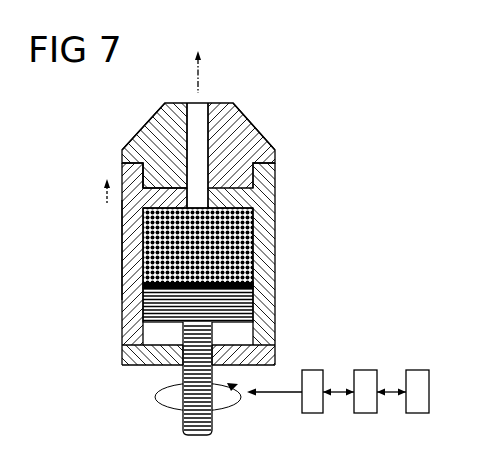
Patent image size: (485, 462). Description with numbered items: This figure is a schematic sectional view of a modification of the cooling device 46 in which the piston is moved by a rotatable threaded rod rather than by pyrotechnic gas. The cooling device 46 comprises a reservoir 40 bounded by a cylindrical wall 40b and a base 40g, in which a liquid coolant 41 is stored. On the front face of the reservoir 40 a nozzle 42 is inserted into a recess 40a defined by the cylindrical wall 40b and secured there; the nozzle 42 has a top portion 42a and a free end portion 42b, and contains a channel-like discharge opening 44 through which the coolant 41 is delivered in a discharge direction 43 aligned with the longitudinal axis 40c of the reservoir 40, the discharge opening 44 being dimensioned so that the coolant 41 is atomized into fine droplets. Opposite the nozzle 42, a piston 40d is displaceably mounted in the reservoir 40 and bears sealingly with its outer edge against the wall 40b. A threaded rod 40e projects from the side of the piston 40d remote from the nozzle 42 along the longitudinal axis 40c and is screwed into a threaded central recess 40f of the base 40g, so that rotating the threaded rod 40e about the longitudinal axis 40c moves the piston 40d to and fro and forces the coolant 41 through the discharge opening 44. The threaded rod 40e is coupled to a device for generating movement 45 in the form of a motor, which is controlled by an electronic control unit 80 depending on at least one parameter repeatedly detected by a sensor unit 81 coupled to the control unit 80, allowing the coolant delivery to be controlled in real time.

The reservoir 40 is at (258, 219).
The recess 40a is at (150, 163).
The cylindrical wall 40b is at (122, 246).
The longitudinal axis 40c is at (86, 194).
The piston 40d is at (137, 309).
The threaded rod 40e is at (186, 424).
The central recess 40f is at (178, 363).
The base 40g is at (122, 355).
The liquid coolant 41 is at (262, 247).
The nozzle 42 is at (276, 155).
The top portion 42a is at (252, 125).
The free end portion 42b is at (262, 170).
The discharge direction 43 is at (186, 72).
The discharge opening 44 is at (193, 118).
The device for generating movement 45 is at (314, 403).
The cooling device 46 is at (292, 292).
The electronic control unit 80 is at (363, 403).
The sensor unit 81 is at (420, 403).